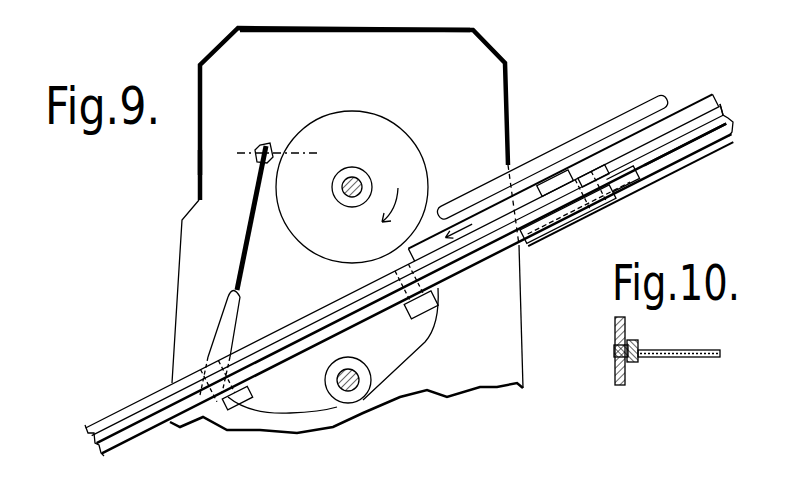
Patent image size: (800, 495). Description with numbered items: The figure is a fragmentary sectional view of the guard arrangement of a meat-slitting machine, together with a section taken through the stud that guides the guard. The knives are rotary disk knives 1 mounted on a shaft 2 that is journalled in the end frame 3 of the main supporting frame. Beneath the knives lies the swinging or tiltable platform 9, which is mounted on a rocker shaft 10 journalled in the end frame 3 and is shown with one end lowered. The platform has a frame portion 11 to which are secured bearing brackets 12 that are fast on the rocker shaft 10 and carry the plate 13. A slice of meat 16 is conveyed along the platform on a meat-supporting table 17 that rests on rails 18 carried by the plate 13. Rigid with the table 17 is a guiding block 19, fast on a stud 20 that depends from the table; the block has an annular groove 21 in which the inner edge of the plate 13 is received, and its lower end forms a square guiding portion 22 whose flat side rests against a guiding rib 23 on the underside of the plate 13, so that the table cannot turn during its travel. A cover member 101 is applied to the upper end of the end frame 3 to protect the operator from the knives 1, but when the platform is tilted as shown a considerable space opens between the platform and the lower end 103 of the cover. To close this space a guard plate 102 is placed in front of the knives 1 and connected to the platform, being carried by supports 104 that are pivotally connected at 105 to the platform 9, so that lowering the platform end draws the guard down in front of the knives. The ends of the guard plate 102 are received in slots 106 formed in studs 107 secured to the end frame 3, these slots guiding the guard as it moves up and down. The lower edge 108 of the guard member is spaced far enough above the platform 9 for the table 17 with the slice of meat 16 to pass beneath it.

In FIG. 9, the rotary disk knives 1 is at (390, 128).
In FIG. 9, the shaft 2 is at (361, 181).
In FIG. 9, the end frame 3 is at (237, 87).
In FIG. 10, the end frame 3 is at (614, 377).
In FIG. 9, the swinging or tiltable platform 9 is at (90, 427).
In FIG. 9, the rocker shaft 10 is at (350, 432).
In FIG. 9, the frame portion 11 is at (683, 160).
In FIG. 9, the bearing brackets 12 is at (402, 347).
In FIG. 9, the plate 13 is at (700, 137).
In FIG. 9, the slice of meat 16 is at (622, 110).
In FIG. 9, the meat-supporting table 17 is at (682, 103).
In FIG. 9, the rails 18 is at (713, 106).
In FIG. 9, the guiding block 19 is at (583, 190).
In FIG. 9, the stud 20 is at (557, 190).
In FIG. 9, the annular groove 21 is at (592, 180).
In FIG. 9, the square guiding portion 22 is at (578, 218).
In FIG. 9, the guiding rib 23 is at (622, 195).
In FIG. 9, the cover member 101 is at (375, 30).
In FIG. 9, the guard plate 102 is at (247, 225).
In FIG. 10, the guard plate 102 is at (706, 359).
In FIG. 9, the lower end 103 is at (197, 160).
In FIG. 9, the supports 104 is at (230, 315).
In FIG. 9, the pivotal connection 105 is at (185, 380).
In FIG. 10, the slots 106 is at (630, 365).
In FIG. 9, the studs 107 is at (266, 143).
In FIG. 10, the studs 107 is at (640, 342).
In FIG. 9, the lower edge 108 is at (233, 290).